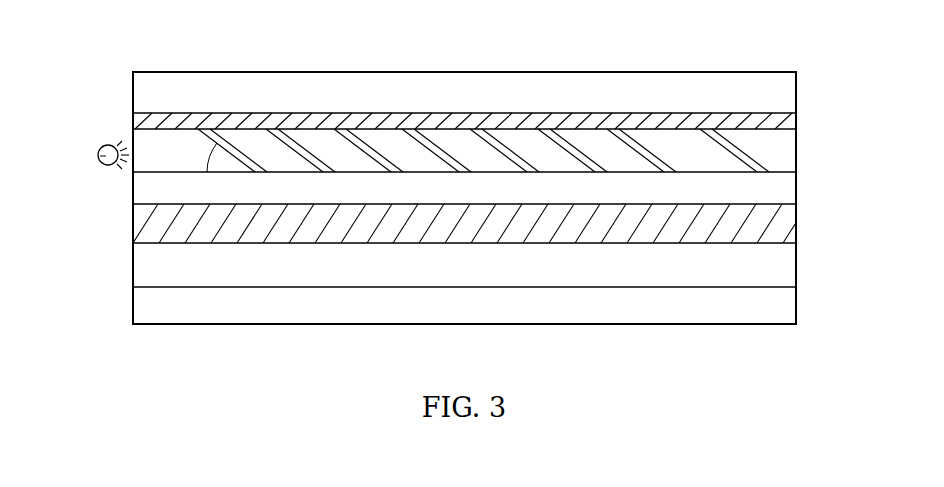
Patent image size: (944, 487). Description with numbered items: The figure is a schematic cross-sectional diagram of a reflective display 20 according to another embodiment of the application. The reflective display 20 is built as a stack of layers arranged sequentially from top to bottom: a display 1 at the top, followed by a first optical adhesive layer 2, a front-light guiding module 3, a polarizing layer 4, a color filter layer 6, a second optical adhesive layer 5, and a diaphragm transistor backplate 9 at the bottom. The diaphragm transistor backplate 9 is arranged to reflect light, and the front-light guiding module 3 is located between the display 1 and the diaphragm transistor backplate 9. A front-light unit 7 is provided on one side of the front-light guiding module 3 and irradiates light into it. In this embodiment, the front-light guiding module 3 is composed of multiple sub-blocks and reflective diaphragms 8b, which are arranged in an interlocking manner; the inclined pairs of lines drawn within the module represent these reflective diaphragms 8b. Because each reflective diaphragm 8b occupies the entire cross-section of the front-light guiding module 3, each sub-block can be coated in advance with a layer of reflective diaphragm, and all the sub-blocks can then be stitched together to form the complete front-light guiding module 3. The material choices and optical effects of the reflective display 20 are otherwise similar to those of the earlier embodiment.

The reflective display 20 is at (207, 50).
The display 1 is at (788, 99).
The first optical adhesive layer 2 is at (790, 127).
The front-light guiding module 3 is at (788, 154).
The reflective diaphragms 8b is at (502, 148).
The polarizing layer 4 is at (790, 191).
The color filter layer 6 is at (785, 234).
The second optical adhesive layer 5 is at (780, 271).
The diaphragm transistor backplate 9 is at (780, 308).
The front-light unit 7 is at (100, 157).